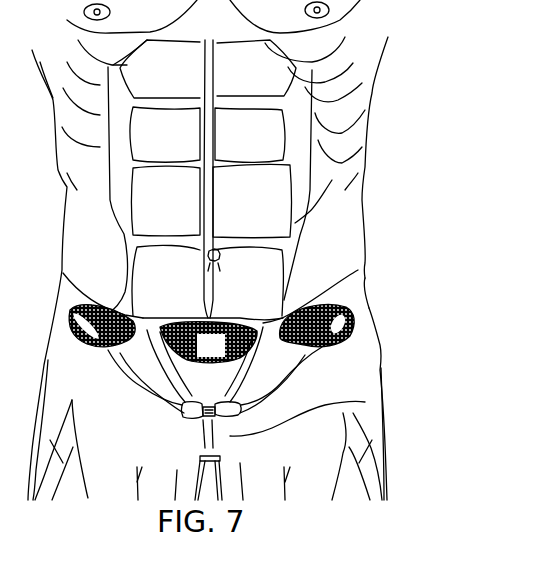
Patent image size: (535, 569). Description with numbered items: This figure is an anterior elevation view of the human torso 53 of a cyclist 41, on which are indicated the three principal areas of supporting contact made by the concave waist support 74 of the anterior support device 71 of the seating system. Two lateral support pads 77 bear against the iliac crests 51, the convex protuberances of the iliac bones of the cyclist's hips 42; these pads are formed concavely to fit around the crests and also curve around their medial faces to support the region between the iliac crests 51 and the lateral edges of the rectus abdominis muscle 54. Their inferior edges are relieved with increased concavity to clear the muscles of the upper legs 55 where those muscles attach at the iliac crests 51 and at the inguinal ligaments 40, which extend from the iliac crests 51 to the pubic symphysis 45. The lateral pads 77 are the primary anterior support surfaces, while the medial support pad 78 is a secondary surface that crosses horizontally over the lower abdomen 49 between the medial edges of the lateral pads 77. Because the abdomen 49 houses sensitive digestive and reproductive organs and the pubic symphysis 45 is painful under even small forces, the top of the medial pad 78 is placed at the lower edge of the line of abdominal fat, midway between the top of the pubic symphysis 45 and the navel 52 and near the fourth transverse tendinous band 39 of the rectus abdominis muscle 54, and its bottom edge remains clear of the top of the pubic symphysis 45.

The cyclist 41 is at (221, 28).
The lower abdomen 49 is at (221, 295).
The human torso 53 is at (375, 207).
The navel 52 is at (283, 262).
The fourth transverse tendinous band 39 is at (358, 270).
The hips 42 is at (375, 297).
The concave waist support 74 is at (375, 322).
The anterior support device 71 is at (350, 330).
The lateral support pads 77 is at (65, 328).
The iliac crests 51 is at (88, 347).
The inguinal ligaments 40 is at (307, 345).
The pubic symphysis 45 is at (365, 402).
The medial support pad 78 is at (223, 355).
The rectus abdominis muscle 54 is at (221, 393).
The upper legs 55 is at (128, 452).